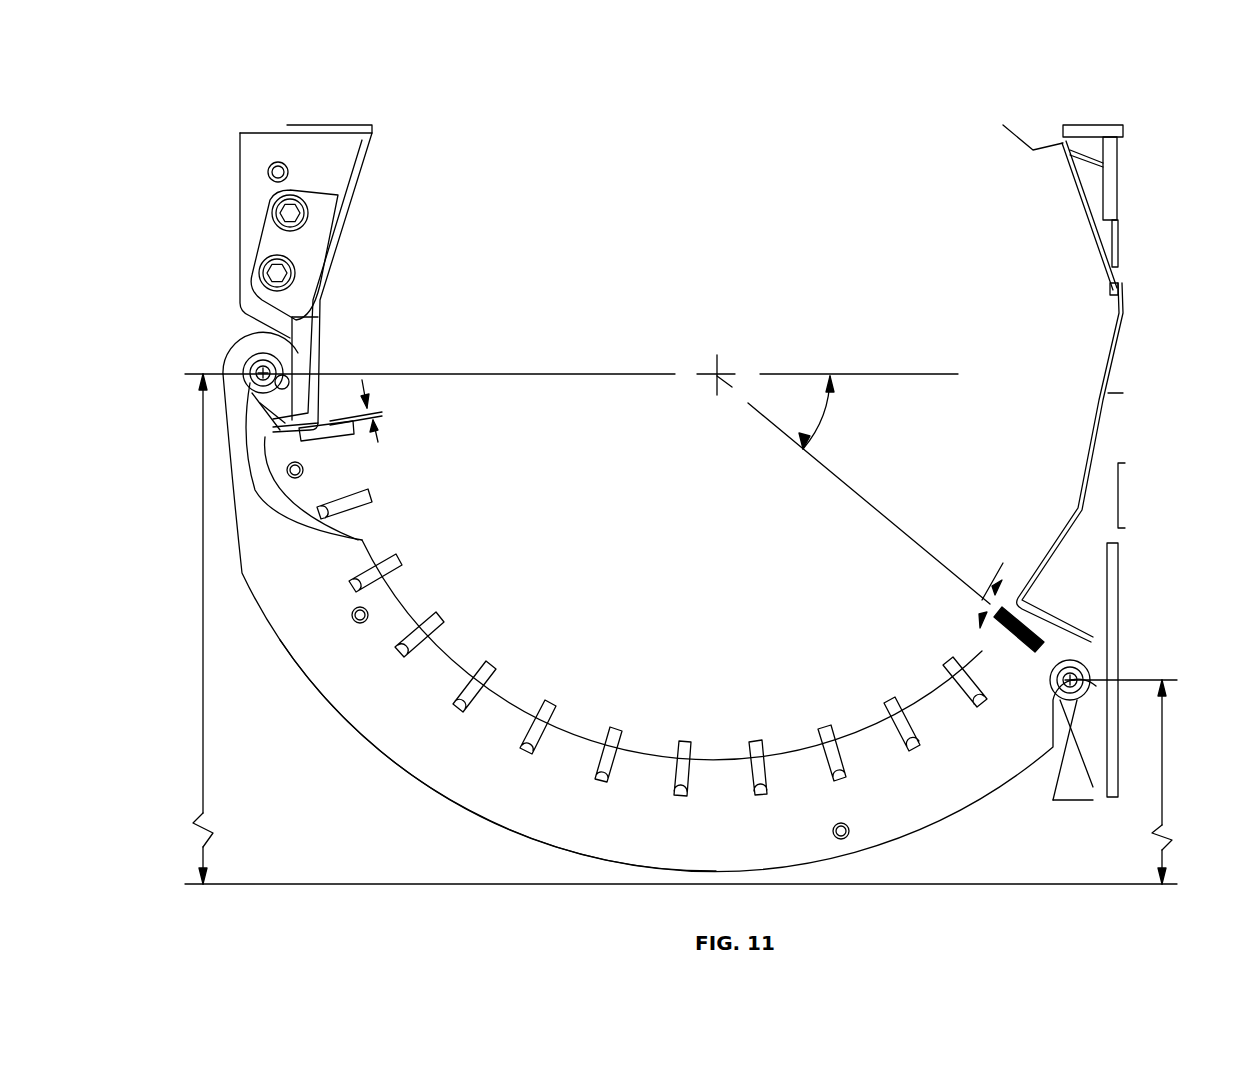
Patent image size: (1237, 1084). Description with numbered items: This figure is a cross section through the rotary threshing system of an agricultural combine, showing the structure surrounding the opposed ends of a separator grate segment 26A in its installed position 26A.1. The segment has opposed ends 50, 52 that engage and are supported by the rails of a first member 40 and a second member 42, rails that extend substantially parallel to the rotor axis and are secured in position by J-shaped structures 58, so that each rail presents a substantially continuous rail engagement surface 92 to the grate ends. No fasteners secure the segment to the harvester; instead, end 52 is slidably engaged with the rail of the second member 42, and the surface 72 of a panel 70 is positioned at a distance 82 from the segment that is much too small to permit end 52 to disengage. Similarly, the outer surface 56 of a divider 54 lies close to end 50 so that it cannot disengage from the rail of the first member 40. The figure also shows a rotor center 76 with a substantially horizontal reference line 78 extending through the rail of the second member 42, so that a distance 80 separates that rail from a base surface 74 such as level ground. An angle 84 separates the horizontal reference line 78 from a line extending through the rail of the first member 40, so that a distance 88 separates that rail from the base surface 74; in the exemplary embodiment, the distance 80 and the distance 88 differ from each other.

The separator grate segment 26A is at (370, 743).
The installed position 26A.1 is at (517, 835).
The first member 40 is at (1068, 700).
The second member 42 is at (367, 541).
The end 50 is at (1068, 772).
The end 52 is at (297, 393).
The divider 54 is at (1087, 300).
The outer surface 56 is at (1098, 405).
The J-shaped structures 58 is at (330, 511).
The panel 70 is at (357, 160).
The surface 72 is at (323, 467).
The base surface 74 is at (283, 884).
The rotor center 76 is at (714, 378).
The horizontal reference line 78 is at (556, 372).
The distance 80 is at (203, 663).
The distance 82 is at (378, 442).
The angle 84 is at (822, 413).
The distance 88 is at (1162, 772).
The rail engagement surface 92 is at (296, 340).